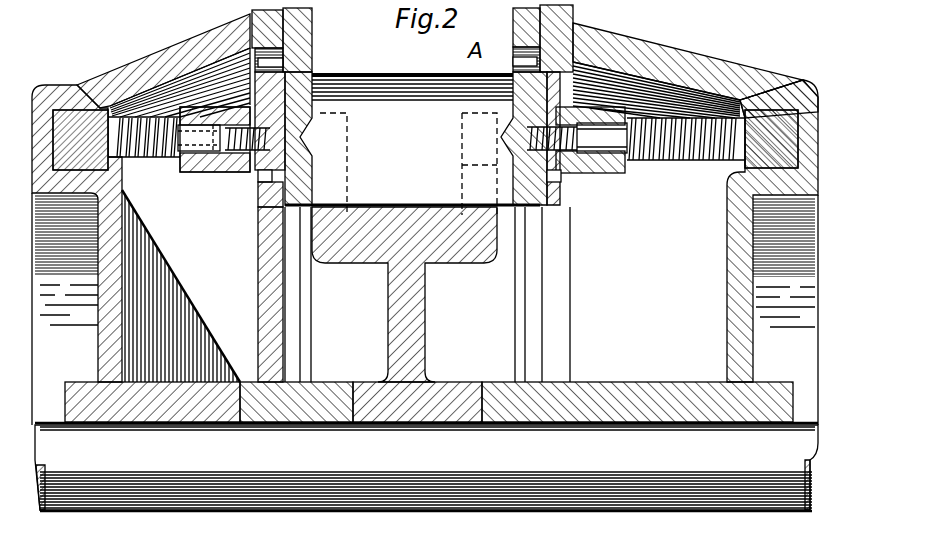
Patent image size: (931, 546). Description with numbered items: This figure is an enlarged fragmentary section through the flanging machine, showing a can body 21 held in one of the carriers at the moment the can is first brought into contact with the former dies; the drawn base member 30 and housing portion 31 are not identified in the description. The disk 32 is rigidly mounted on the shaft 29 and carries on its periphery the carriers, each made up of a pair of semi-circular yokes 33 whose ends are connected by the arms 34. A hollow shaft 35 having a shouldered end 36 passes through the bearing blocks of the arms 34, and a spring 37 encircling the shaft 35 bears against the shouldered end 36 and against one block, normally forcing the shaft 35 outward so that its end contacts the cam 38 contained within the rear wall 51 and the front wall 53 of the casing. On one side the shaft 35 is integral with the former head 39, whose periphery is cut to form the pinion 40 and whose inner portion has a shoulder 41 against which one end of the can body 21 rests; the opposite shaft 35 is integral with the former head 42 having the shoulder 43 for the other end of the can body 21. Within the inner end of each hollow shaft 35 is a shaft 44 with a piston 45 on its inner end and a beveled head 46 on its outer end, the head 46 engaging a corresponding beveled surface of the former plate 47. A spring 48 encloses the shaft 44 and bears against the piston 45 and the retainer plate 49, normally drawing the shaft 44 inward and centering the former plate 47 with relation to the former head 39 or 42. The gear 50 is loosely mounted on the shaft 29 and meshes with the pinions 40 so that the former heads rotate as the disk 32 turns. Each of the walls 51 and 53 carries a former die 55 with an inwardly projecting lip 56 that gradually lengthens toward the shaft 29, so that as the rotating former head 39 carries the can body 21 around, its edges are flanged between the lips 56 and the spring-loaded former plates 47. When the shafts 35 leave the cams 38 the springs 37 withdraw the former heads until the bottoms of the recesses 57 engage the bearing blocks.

The can body 21 is at (406, 76).
The shaft 29 is at (247, 502).
The base plate 30 is at (185, 405).
The housing 31 is at (658, 392).
The disk 32 is at (427, 313).
The semi-circular yokes 33 is at (348, 146).
The arms 34 is at (652, 42).
The hollow shaft 35 is at (156, 110).
The shouldered end 36 is at (117, 120).
The spring 37 is at (133, 115).
The cam 38 is at (65, 110).
The former head 39 is at (313, 186).
The pinion 40 is at (259, 218).
The shoulder 41 is at (312, 57).
The former head 42 is at (568, 105).
The shoulder 43 is at (515, 68).
The shaft 44 is at (243, 174).
The piston 45 is at (197, 174).
The beveled head 46 is at (312, 134).
The former plate 47 is at (318, 108).
The spring 48 is at (257, 183).
The retainer plate 49 is at (317, 172).
The gear 50 is at (323, 393).
The rear wall 51 is at (40, 85).
The front wall 53 is at (712, 66).
The former die 55 is at (283, 26).
The lip 56 is at (312, 67).
The recess 57 is at (200, 100).